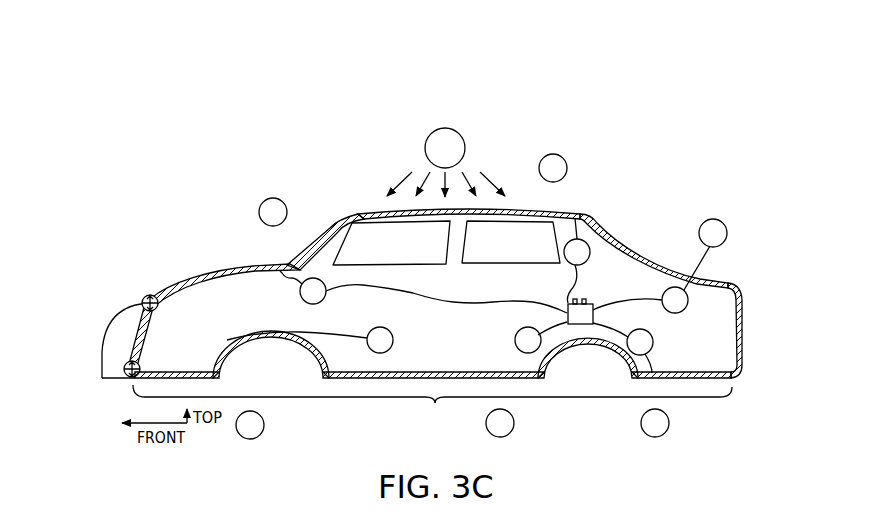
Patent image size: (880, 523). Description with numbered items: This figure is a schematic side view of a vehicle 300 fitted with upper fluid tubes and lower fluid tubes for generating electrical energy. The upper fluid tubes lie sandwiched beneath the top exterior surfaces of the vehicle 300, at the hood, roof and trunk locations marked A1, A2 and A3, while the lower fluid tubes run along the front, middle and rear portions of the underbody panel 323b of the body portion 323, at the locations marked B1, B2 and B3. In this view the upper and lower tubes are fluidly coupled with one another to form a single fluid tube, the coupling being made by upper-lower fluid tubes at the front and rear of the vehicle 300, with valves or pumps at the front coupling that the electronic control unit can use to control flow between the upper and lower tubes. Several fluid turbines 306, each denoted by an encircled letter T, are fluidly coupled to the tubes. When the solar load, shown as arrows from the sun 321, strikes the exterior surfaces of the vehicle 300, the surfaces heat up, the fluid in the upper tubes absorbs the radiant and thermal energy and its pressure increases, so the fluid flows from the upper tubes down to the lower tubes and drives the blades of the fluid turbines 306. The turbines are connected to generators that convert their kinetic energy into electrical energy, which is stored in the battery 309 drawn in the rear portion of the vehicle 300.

The vehicle 300 is at (86, 382).
The fluid turbine 306 is at (302, 298).
The battery 309 is at (583, 325).
The sun 321 is at (445, 127).
The body portion 323 is at (103, 357).
The underbody panel 323b is at (432, 409).
The region A1 is at (263, 263).
The region A2 is at (541, 213).
The region A3 is at (713, 233).
The region B1 is at (217, 380).
The region B2 is at (473, 379).
The region B3 is at (673, 380).